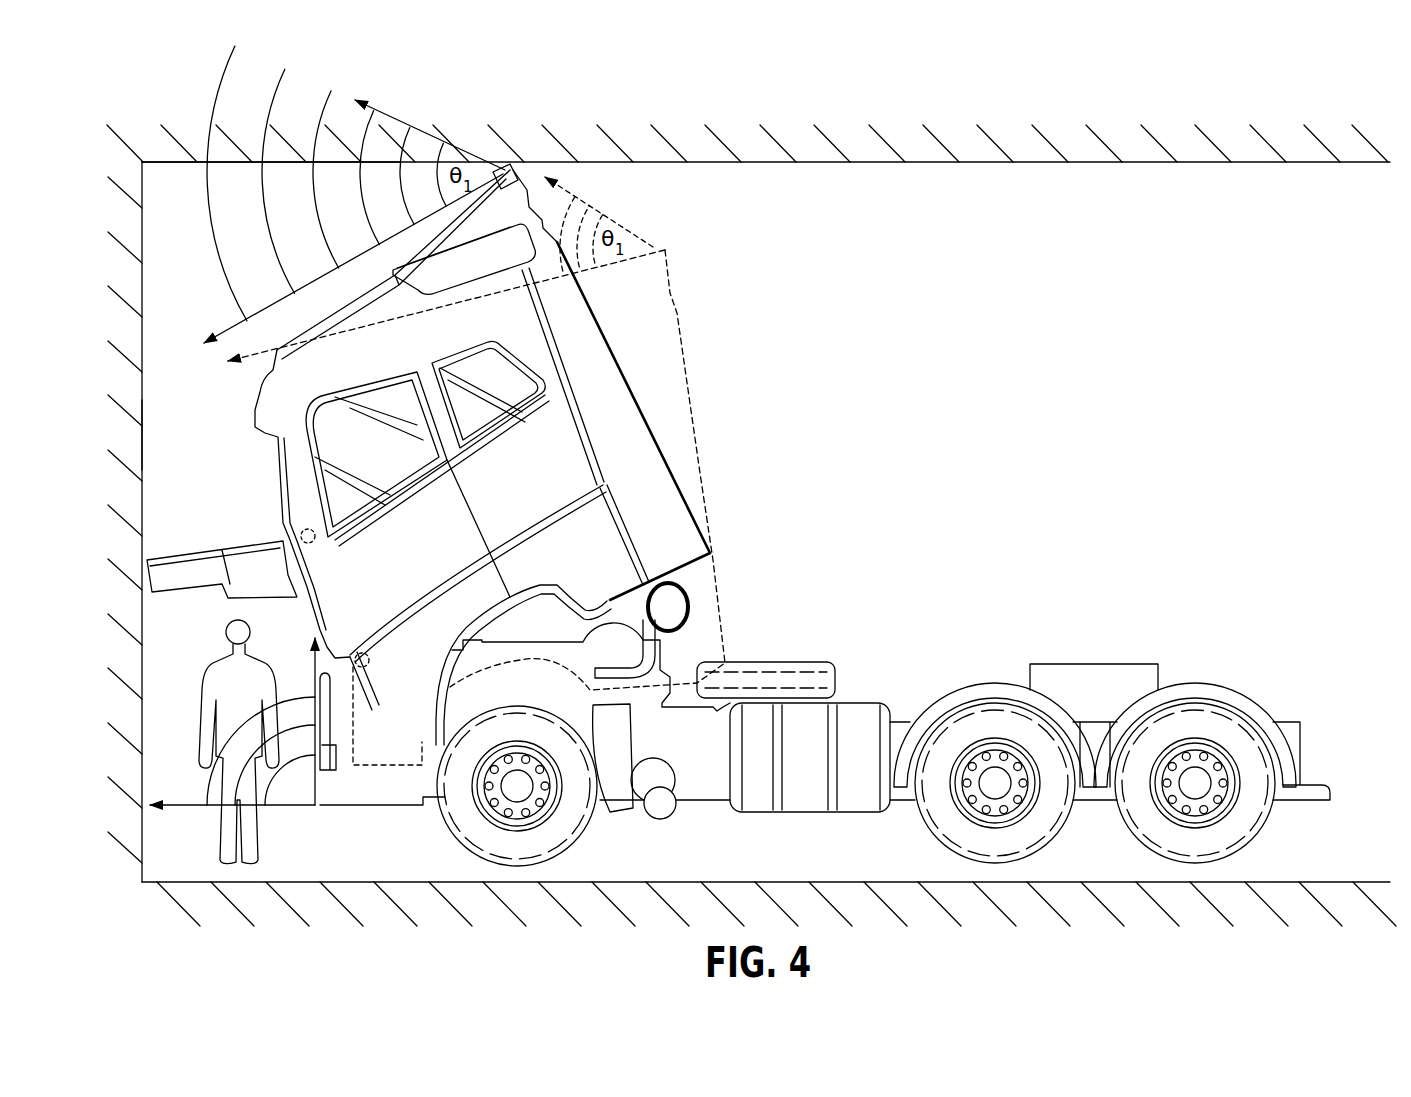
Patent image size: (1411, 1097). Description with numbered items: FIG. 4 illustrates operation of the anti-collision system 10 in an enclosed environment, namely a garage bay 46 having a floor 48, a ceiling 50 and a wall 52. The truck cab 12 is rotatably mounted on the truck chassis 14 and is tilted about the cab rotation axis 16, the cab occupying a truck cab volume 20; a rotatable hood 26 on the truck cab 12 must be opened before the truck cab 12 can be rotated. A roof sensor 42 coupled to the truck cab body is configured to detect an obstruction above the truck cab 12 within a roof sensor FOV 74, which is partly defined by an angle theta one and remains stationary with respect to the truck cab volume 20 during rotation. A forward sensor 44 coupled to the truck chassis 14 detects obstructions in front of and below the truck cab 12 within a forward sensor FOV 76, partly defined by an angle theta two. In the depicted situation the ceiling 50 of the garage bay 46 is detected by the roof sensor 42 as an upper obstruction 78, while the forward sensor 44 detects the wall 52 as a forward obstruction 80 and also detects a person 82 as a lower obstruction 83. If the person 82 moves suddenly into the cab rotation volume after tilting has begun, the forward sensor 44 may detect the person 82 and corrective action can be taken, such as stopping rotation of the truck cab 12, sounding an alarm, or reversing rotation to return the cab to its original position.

The anti-collision system 10 is at (999, 417).
The truck cab 12 is at (721, 493).
The truck chassis 14 is at (948, 646).
The cab rotation axis 16 is at (369, 660).
The truck cab volume 20 is at (482, 424).
The rotatable hood 26 is at (150, 580).
The roof sensor 42 is at (521, 176).
The forward sensor 44 is at (314, 807).
The garage bay 46 is at (965, 190).
The floor 48 is at (334, 915).
The ceiling 50 is at (487, 93).
The wall 52 is at (138, 392).
The roof sensor FOV 74 is at (216, 238).
The forward sensor FOV 76 is at (212, 754).
The upper obstruction 78 is at (429, 136).
The forward obstruction 80 is at (143, 433).
The person 82 is at (250, 720).
The lower obstruction 83 is at (222, 788).